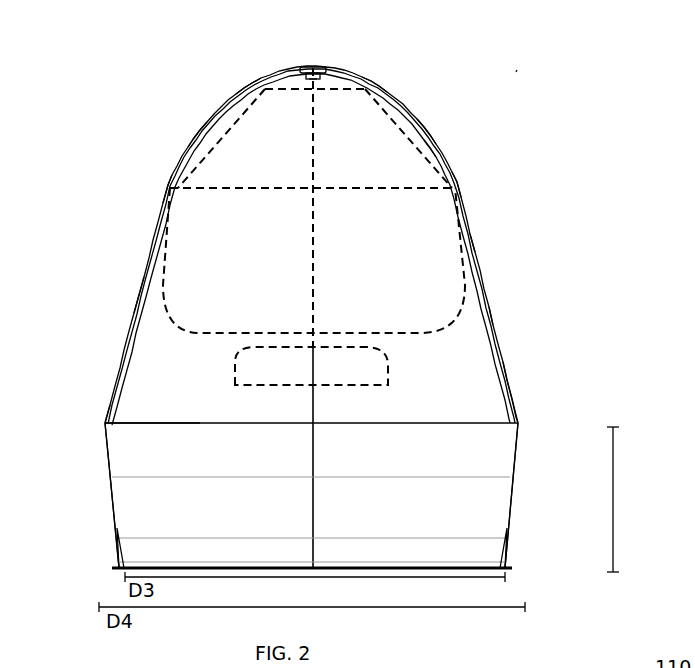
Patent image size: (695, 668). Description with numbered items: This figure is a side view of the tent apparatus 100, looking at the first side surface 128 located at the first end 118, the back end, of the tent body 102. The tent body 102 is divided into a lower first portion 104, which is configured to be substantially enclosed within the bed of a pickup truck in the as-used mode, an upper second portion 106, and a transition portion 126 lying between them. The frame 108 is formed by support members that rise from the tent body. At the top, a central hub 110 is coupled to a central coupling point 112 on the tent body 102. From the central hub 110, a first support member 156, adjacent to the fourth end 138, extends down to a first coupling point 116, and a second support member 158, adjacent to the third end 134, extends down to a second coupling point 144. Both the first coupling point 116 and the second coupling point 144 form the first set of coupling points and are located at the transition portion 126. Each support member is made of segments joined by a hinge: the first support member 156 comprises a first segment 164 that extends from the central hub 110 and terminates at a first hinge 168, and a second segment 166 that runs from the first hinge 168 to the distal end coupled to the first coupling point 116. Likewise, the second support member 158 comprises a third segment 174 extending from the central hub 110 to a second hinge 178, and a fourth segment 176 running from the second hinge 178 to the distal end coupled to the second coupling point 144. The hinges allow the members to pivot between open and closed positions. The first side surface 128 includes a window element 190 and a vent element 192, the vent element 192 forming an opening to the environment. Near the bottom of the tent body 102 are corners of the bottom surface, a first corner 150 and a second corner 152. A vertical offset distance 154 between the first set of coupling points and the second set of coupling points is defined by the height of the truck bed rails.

The tent apparatus 100 is at (517, 71).
The tent body 102 is at (405, 118).
The first portion 104 is at (500, 453).
The second portion 106 is at (495, 389).
The frame 108 is at (432, 128).
The central hub 110 is at (313, 66).
The central coupling point 112 is at (303, 75).
The first coupling point 116 is at (525, 425).
The first end 118 is at (212, 568).
The transition portion 126 is at (150, 423).
The first side surface 128 is at (462, 402).
The third end 134 is at (117, 507).
The fourth end 138 is at (508, 519).
The second coupling point 144 is at (106, 425).
The first corner 150 is at (508, 561).
The second corner 152 is at (118, 566).
The vertical offset distance 154 is at (614, 470).
The first support member 156 is at (372, 86).
The second support member 158 is at (250, 87).
The first segment 164 is at (433, 137).
The second segment 166 is at (498, 313).
The first hinge 168 is at (460, 181).
The third segment 174 is at (200, 127).
The fourth segment 176 is at (130, 300).
The second hinge 178 is at (168, 183).
The window element 190 is at (458, 243).
The vent element 192 is at (385, 361).